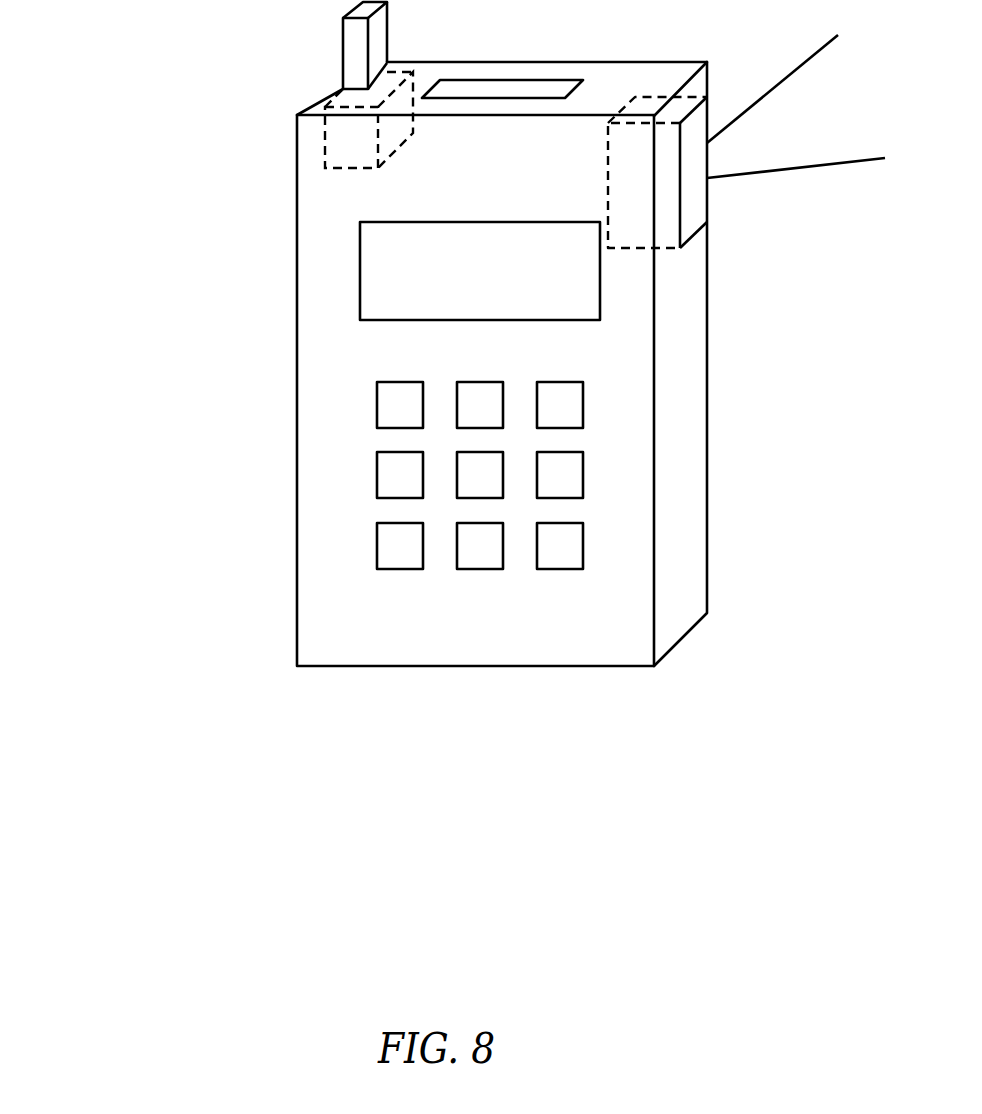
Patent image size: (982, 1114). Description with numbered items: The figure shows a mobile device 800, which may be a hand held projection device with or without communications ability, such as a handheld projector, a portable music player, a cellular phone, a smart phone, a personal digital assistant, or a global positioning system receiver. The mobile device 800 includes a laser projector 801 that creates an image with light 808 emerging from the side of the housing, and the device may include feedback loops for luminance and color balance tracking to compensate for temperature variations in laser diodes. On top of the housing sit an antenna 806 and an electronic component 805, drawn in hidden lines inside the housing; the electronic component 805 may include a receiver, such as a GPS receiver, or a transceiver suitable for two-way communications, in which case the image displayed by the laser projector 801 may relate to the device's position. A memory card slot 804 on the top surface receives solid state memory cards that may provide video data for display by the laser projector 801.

The mobile device 800 is at (145, 712).
The laser projector 801 is at (707, 213).
The memory card slot 804 is at (571, 88).
The electronic component 805 is at (403, 143).
The antenna 806 is at (343, 34).
The light 808 is at (796, 106).